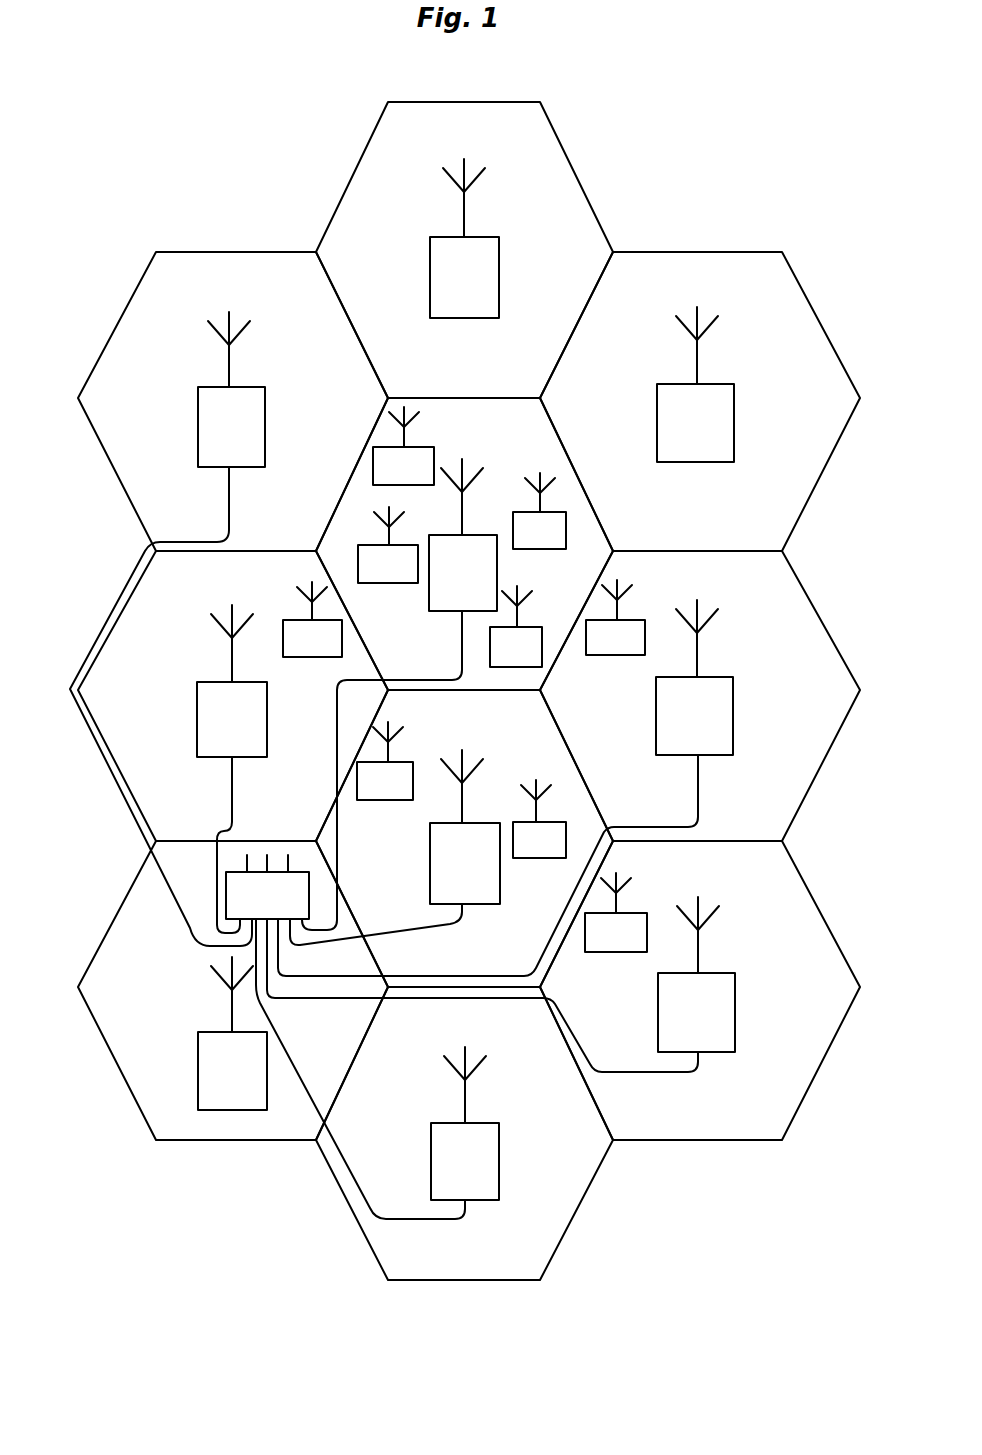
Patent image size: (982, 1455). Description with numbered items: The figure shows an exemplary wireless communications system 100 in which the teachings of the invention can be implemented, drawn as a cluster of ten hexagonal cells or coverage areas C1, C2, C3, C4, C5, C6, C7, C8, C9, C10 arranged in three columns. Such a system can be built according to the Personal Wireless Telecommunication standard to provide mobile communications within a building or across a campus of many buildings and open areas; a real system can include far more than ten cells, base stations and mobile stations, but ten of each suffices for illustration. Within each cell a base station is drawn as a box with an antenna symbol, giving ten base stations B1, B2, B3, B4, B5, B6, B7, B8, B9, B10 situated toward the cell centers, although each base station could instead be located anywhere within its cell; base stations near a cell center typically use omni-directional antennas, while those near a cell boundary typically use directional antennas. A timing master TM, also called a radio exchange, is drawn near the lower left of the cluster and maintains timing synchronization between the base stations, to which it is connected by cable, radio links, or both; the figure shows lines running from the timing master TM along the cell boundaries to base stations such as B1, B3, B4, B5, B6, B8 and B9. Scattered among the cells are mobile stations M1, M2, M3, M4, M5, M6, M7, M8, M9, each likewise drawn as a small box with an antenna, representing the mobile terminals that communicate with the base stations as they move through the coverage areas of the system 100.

The wireless communications system 100 is at (103, 133).
The timing master TM is at (267, 887).
The base station B1 is at (399, 694).
The base station B2 is at (695, 384).
The base station B3 is at (505, 788).
The base station B4 is at (395, 847).
The base station B5 is at (232, 769).
The base station B6 is at (167, 629).
The base station B7 is at (464, 238).
The base station B8 is at (501, 984).
The base station B9 is at (377, 1069).
The base station B10 is at (232, 1033).
The mobile station M1 is at (616, 912).
The mobile station M2 is at (312, 619).
The mobile station M3 is at (388, 545).
The mobile station M4 is at (539, 511).
The mobile station M5 is at (615, 617).
The mobile station M6 is at (403, 446).
The mobile station M7 is at (516, 626).
The mobile station M8 is at (539, 819).
The mobile station M9 is at (385, 761).
The cell C1 is at (424, 670).
The cell C2 is at (647, 530).
The cell C3 is at (646, 817).
The cell C4 is at (422, 967).
The cell C5 is at (191, 825).
The cell C6 is at (189, 535).
The cell C7 is at (426, 388).
The cell C8 is at (649, 1116).
The cell C9 is at (422, 1261).
The cell C10 is at (203, 1133).